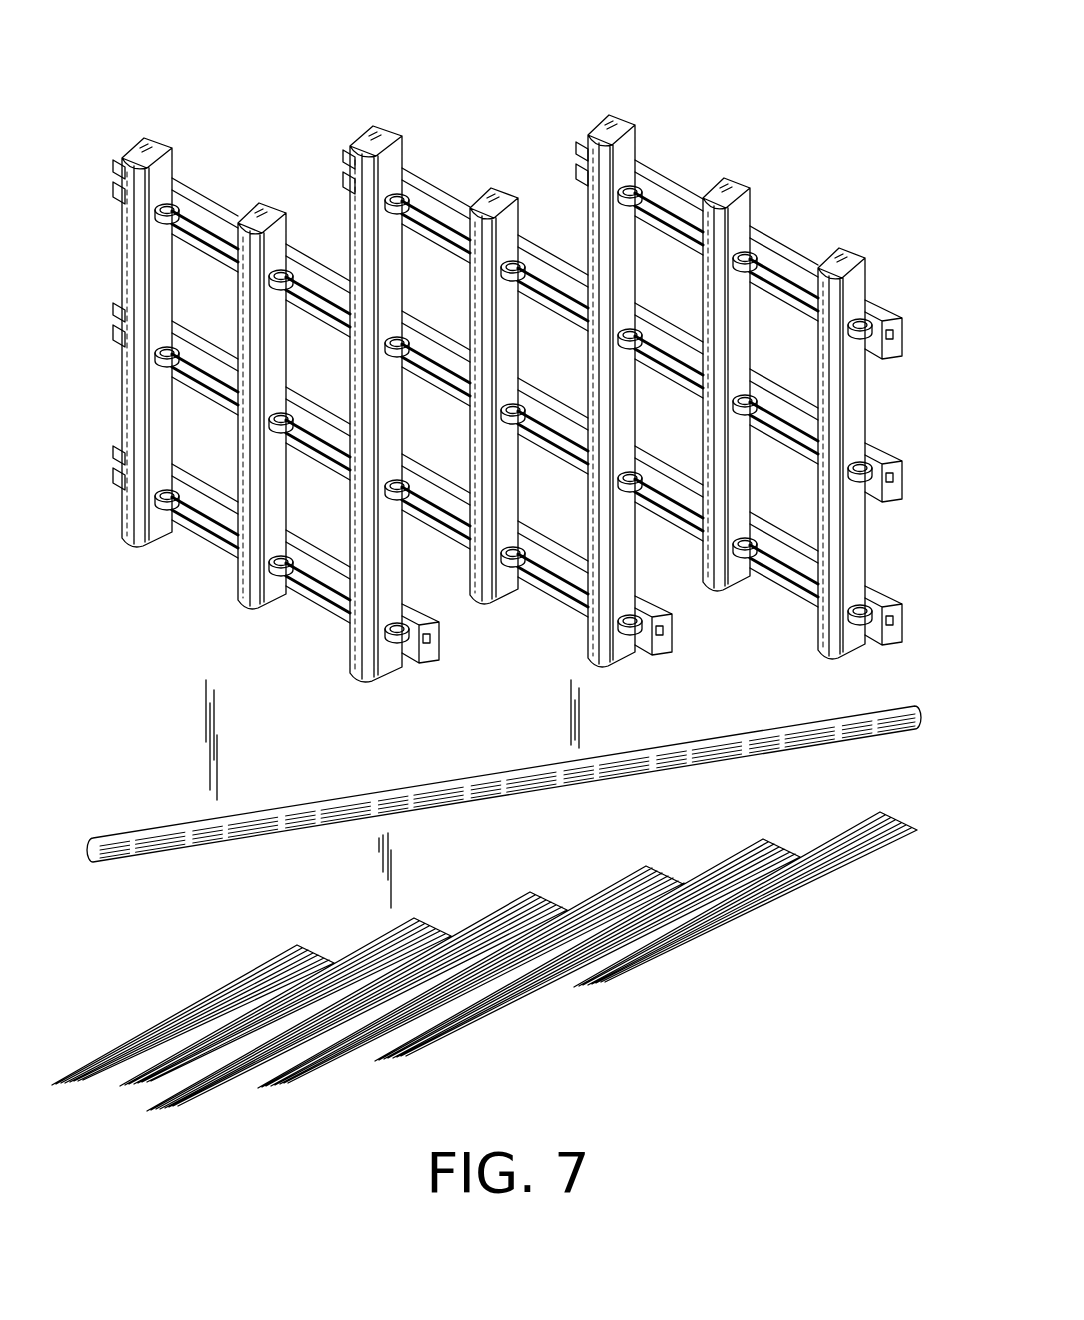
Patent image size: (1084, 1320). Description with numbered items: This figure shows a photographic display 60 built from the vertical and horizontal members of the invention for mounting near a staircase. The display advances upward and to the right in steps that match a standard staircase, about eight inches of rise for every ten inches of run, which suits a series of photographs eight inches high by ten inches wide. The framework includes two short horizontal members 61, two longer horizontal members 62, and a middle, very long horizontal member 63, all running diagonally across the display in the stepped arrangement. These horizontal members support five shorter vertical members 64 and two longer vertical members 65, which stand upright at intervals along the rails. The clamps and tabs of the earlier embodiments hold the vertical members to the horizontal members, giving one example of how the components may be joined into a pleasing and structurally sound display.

The photographic display 60 is at (480, 92).
The short horizontal member 61 is at (790, 238).
The longer horizontal member 62 is at (886, 445).
The middle very long horizontal member 63 is at (782, 590).
The shorter vertical member 64 is at (162, 140).
The longer vertical member 65 is at (388, 128).